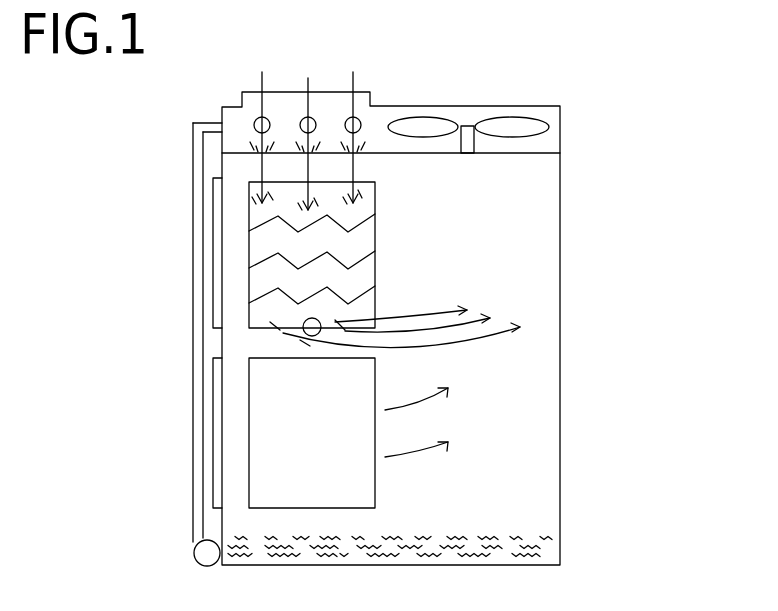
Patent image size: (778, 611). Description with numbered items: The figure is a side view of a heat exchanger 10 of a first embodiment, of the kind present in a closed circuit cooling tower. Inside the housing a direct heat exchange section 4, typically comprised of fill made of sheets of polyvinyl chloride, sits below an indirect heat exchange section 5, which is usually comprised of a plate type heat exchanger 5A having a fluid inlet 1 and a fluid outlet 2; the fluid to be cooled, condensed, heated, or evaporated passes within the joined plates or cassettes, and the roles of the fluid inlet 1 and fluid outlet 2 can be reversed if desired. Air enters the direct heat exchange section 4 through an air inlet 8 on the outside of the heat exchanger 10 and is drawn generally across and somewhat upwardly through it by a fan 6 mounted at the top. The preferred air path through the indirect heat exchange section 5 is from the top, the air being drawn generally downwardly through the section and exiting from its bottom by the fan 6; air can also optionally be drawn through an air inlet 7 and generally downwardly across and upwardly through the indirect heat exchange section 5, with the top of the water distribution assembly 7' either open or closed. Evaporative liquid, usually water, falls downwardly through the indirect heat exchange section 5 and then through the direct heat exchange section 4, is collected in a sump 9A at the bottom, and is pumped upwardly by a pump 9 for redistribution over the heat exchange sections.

The fluid inlet 1 is at (304, 321).
The fluid outlet 2 is at (316, 170).
The direct heat exchange section 4 is at (377, 495).
The indirect heat exchange section 5 is at (380, 297).
The plate type heat exchanger 5A is at (337, 223).
The fan 6 is at (505, 117).
The air inlet 7 is at (177, 343).
The top of the water distribution assembly 7' is at (307, 116).
The air inlet 8 is at (212, 448).
The pump 9 is at (194, 553).
The sump 9A is at (517, 533).
The heat exchanger 10 is at (612, 175).